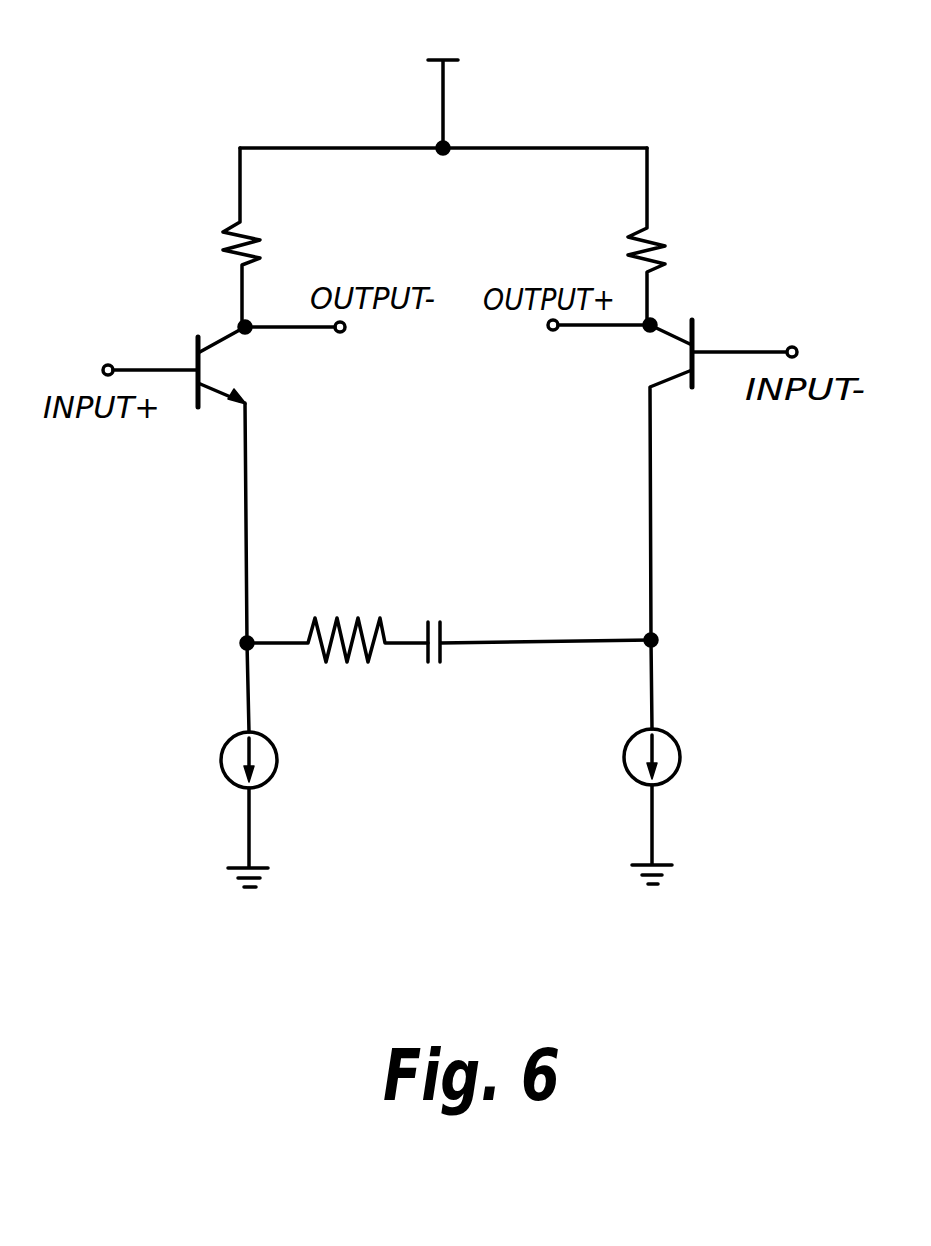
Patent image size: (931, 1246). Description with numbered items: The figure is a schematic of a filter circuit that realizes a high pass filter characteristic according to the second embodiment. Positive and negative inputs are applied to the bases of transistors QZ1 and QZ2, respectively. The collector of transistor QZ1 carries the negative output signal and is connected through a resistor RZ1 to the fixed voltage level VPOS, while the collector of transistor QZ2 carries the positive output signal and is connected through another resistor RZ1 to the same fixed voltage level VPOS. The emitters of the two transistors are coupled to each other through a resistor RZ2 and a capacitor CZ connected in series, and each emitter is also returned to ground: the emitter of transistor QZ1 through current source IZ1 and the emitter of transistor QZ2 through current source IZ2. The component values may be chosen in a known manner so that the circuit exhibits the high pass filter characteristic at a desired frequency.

The fixed voltage level VPOS is at (443, 82).
The resistor RZ1 is at (479, 237).
The transistor QZ1 is at (224, 482).
The transistor QZ2 is at (672, 479).
The resistor RZ2 is at (334, 674).
The capacitor CZ is at (533, 670).
The current source IZ1 is at (284, 765).
The current source IZ2 is at (689, 762).